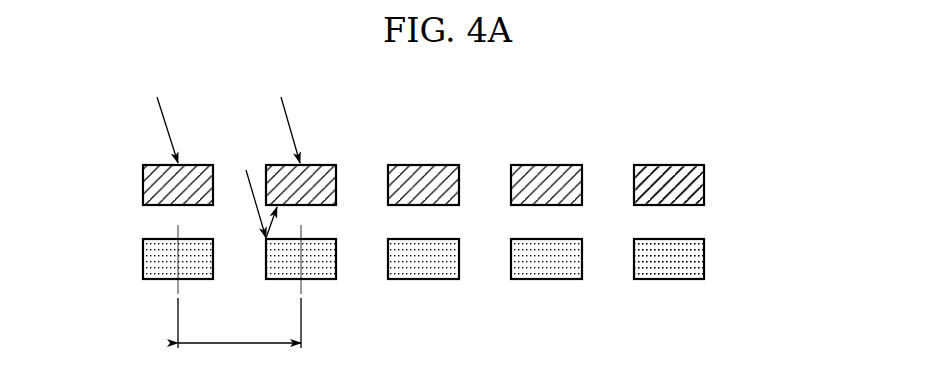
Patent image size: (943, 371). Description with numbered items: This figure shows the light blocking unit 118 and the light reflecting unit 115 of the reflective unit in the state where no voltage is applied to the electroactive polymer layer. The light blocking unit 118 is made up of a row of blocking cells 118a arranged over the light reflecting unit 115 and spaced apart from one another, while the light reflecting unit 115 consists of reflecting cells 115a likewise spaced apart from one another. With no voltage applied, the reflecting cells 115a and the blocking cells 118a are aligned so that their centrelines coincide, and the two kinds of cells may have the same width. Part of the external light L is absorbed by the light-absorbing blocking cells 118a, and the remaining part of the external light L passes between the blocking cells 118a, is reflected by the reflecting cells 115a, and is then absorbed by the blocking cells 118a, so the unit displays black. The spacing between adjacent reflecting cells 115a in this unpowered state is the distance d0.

The light blocking unit 118 is at (708, 175).
The blocking cells 118a is at (683, 176).
The light reflecting unit 115 is at (709, 257).
The reflecting cells 115a is at (684, 271).
The external light L is at (223, 154).
The distance between the reflecting cells d0 is at (239, 286).